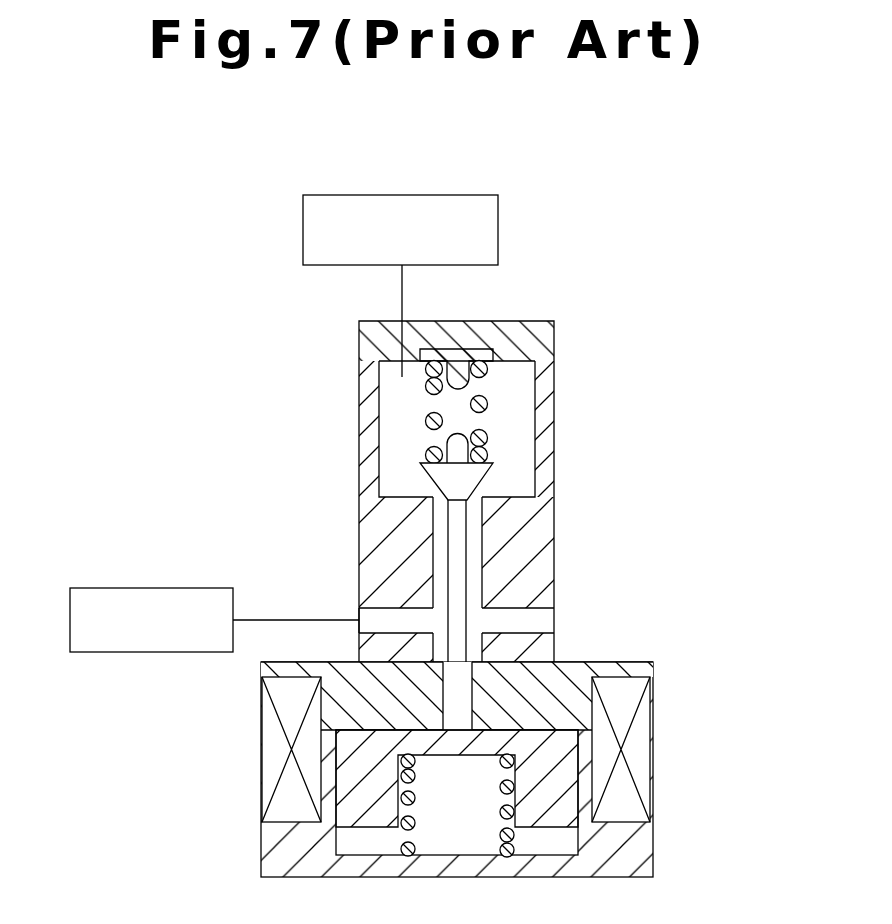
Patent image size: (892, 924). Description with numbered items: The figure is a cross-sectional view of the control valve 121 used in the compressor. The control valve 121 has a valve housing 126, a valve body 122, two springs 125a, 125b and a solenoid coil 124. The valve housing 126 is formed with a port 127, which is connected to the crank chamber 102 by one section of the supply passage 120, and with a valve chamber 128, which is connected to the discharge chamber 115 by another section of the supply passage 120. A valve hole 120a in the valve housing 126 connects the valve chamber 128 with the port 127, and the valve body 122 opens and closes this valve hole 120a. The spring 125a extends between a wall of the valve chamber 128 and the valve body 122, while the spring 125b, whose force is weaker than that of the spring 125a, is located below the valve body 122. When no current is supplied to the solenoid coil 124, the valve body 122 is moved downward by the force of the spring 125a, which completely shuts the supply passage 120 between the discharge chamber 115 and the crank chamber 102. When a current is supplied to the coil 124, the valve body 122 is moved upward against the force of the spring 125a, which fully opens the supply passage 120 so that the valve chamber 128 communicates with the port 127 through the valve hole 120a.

The crank chamber 102 is at (127, 588).
The discharge chamber 115 is at (500, 229).
The supply passage 120 is at (402, 290).
The valve hole 120a is at (477, 558).
The control valve 121 is at (513, 574).
The valve body 122 is at (470, 480).
The solenoid coil 124 is at (642, 730).
The spring 125a is at (493, 385).
The spring 125b is at (513, 790).
The valve housing 126 is at (554, 532).
The port 127 is at (360, 617).
The valve chamber 128 is at (525, 455).